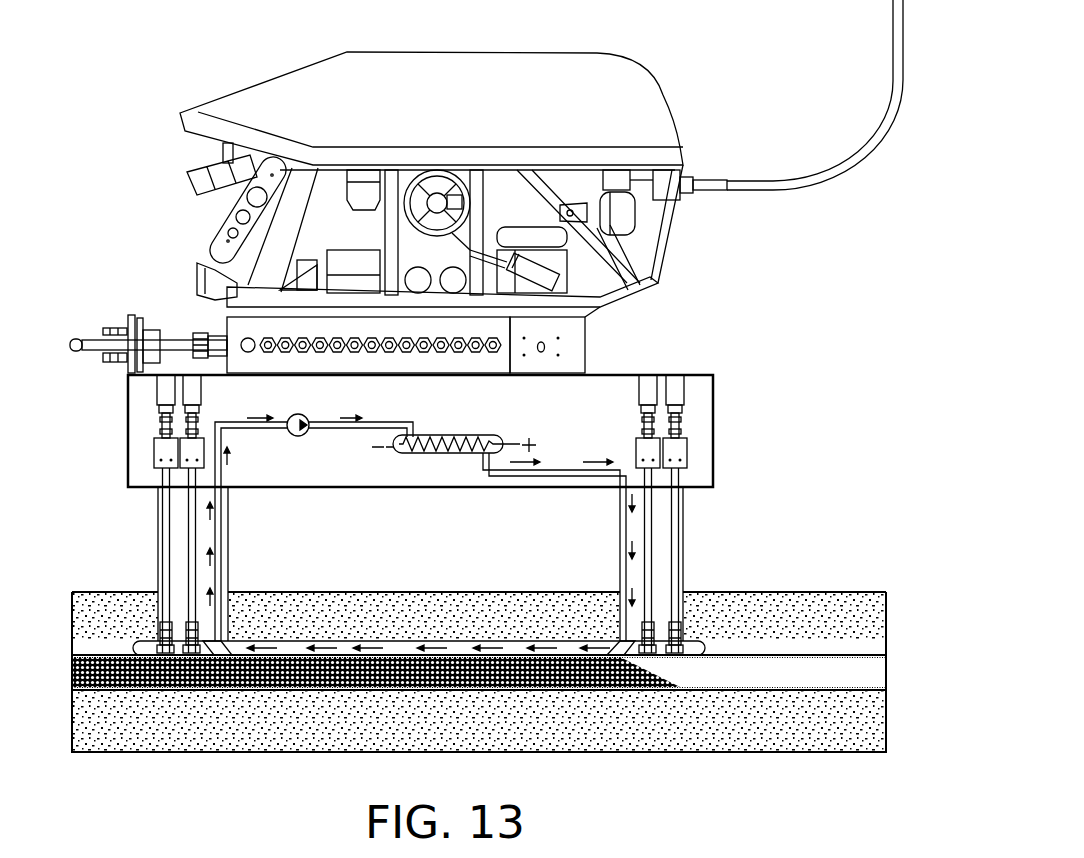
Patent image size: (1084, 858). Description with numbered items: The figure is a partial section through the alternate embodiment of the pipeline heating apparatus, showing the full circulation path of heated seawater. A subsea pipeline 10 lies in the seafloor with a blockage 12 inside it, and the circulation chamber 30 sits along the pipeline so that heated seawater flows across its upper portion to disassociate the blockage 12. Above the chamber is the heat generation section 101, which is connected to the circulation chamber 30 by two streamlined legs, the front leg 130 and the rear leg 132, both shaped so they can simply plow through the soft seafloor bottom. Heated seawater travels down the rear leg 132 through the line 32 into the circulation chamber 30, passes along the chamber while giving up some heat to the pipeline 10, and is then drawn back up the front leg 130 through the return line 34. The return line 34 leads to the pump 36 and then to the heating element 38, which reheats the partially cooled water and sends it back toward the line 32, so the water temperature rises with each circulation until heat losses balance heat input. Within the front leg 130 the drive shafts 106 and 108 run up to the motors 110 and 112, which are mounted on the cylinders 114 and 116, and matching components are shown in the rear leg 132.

The subsea pipeline 10 is at (717, 690).
The blockage 12 is at (633, 690).
The circulation chamber 30 is at (350, 640).
The line 32 is at (623, 568).
The return line 34 is at (220, 578).
The pump 36 is at (307, 413).
The heating element 38 is at (457, 435).
The heat generation section 101 is at (420, 446).
The drive shaft 106 is at (170, 511).
The drive shaft 108 is at (193, 538).
The motor 110 is at (155, 448).
The motor 112 is at (200, 445).
The cylinder 114 is at (160, 390).
The cylinder 116 is at (200, 393).
The front leg 130 is at (230, 540).
The rear leg 132 is at (683, 537).